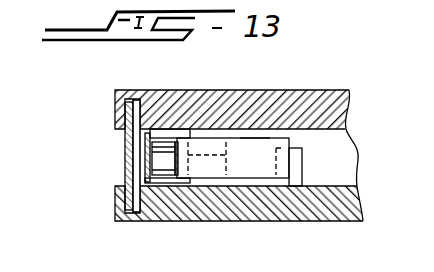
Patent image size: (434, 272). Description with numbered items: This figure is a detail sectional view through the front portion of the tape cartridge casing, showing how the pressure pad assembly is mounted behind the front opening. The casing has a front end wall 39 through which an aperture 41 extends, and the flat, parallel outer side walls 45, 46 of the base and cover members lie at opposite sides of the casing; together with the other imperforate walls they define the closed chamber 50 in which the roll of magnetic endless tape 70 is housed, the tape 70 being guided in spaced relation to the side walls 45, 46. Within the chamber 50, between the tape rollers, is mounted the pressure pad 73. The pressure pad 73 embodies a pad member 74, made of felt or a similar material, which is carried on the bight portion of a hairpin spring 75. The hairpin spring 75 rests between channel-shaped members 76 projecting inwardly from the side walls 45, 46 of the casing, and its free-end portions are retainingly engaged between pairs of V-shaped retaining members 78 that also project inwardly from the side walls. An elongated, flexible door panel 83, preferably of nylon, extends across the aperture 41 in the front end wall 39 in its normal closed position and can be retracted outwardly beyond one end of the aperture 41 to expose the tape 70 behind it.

The front end wall 39 is at (118, 108).
The aperture 41 is at (127, 129).
The side wall 45 is at (238, 210).
The side wall 46 is at (295, 95).
The chamber 50 is at (327, 172).
The magnetic endless tape 70 is at (148, 172).
The pressure pad 73 is at (213, 138).
The pad member 74 is at (162, 152).
The hairpin spring 75 is at (256, 138).
The channel-shaped member 76 is at (190, 183).
The V-shaped retaining members 78 is at (296, 167).
The flexible door panel 83 is at (128, 156).